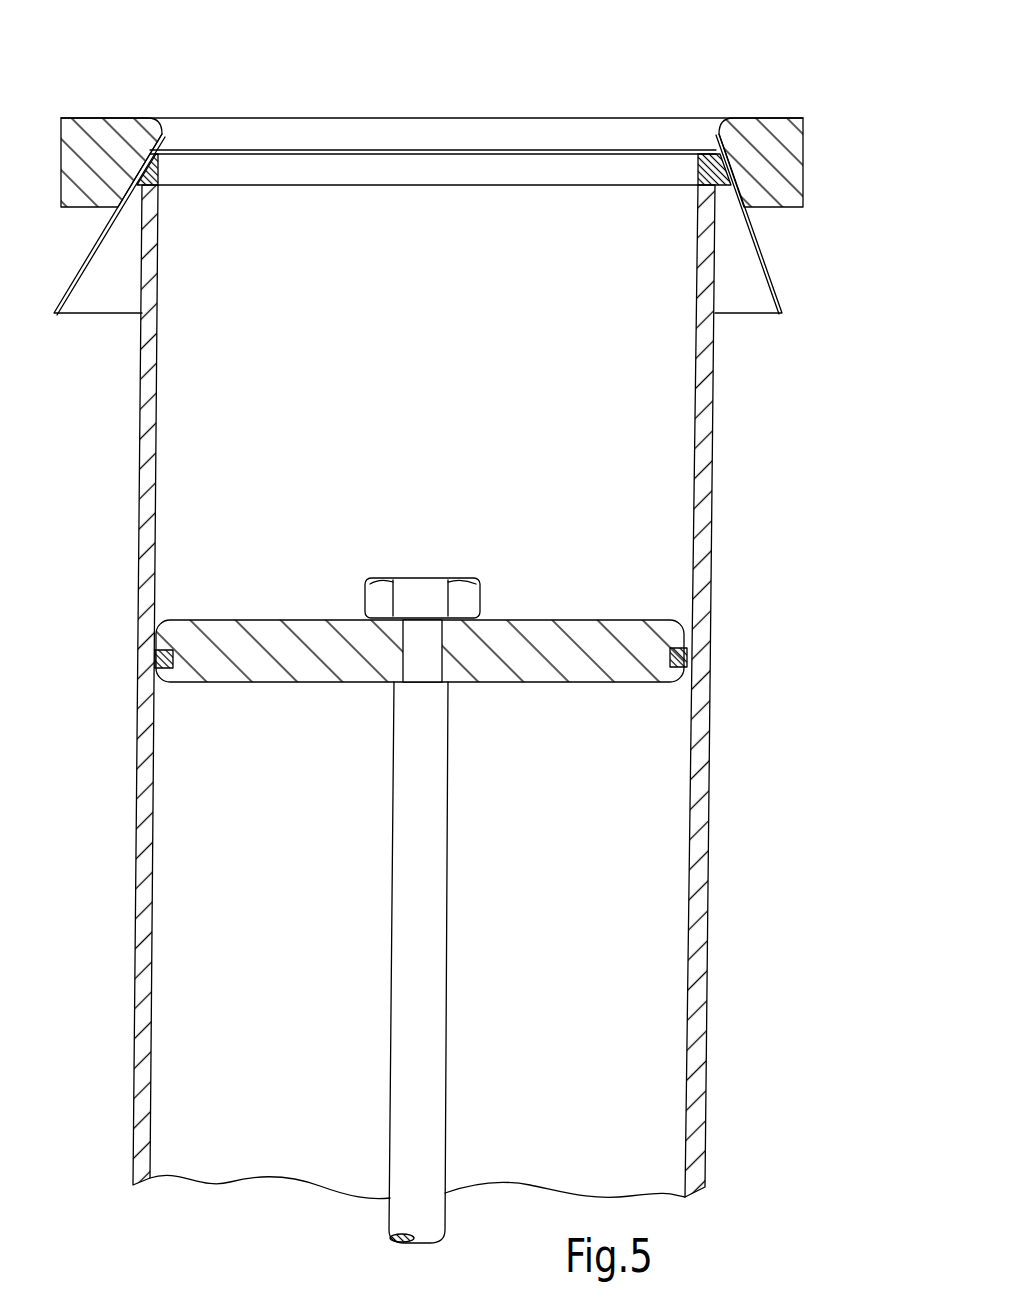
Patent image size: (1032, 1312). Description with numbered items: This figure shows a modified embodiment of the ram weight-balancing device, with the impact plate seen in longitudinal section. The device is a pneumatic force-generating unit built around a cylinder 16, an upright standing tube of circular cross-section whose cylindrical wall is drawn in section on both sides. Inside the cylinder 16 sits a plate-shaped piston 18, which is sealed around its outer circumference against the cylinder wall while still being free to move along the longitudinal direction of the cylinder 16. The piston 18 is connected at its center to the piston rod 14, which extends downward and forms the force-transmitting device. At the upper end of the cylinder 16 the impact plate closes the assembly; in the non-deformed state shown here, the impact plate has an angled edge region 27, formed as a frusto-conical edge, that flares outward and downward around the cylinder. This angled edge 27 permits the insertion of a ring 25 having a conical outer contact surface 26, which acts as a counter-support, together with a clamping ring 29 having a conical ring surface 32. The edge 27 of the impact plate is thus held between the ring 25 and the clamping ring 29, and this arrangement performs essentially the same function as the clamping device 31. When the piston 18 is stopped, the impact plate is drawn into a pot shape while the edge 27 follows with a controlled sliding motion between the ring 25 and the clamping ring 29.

The piston rod 14 is at (428, 960).
The cylinder 16 is at (697, 780).
The piston 18 is at (558, 658).
The ring 25 is at (693, 188).
The conical outer contact surface 26 is at (693, 140).
The angled edge region 27 is at (772, 273).
The clamping ring 29 is at (785, 177).
The clamping device 31 is at (843, 118).
The conical ring surface 32 is at (723, 168).